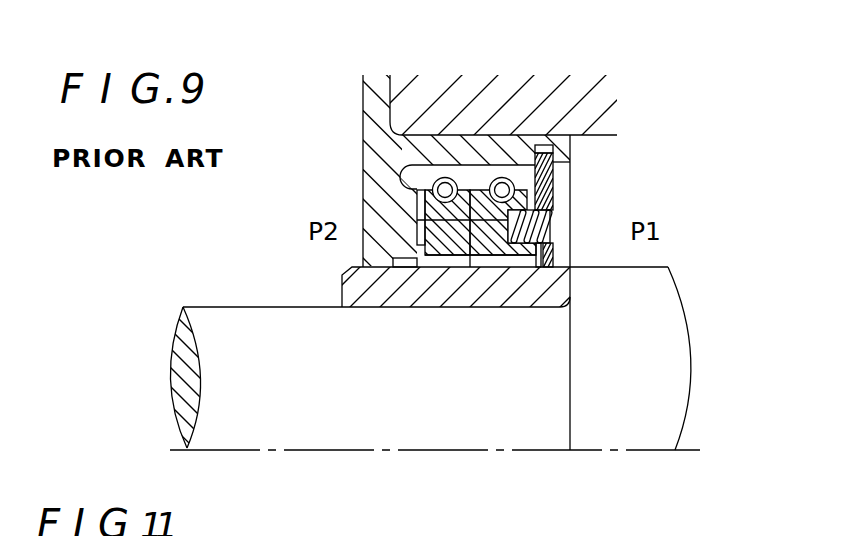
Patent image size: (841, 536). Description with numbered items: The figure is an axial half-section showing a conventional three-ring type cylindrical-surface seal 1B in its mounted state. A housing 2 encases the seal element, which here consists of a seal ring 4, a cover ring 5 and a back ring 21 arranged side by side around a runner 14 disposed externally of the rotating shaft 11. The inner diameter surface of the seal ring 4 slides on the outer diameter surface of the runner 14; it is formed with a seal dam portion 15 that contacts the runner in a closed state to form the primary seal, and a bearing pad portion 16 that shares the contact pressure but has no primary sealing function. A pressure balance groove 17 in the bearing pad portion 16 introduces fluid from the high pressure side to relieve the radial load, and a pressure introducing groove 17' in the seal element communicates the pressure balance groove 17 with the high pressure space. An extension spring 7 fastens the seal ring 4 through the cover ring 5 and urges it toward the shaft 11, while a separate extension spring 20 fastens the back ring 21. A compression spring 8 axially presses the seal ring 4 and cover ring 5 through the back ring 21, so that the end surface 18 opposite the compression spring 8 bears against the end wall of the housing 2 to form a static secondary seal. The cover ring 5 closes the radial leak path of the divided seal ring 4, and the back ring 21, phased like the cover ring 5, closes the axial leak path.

The cylindrical-surface seal 1B is at (350, 140).
The housing 2 is at (373, 95).
The seal ring 4 is at (432, 262).
The cover ring 5 is at (466, 188).
The extension spring 7 is at (444, 177).
The compression spring 8 is at (549, 220).
The shaft 11 is at (238, 430).
The runner 14 is at (357, 290).
The seal dam portion 15 is at (409, 262).
The bearing pad portion 16 is at (447, 262).
The pressure balance groove 17 is at (480, 395).
The pressure introducing groove 17' is at (559, 330).
The end surface 18 is at (417, 218).
The extension spring 20 is at (503, 177).
The back ring 21 is at (493, 262).